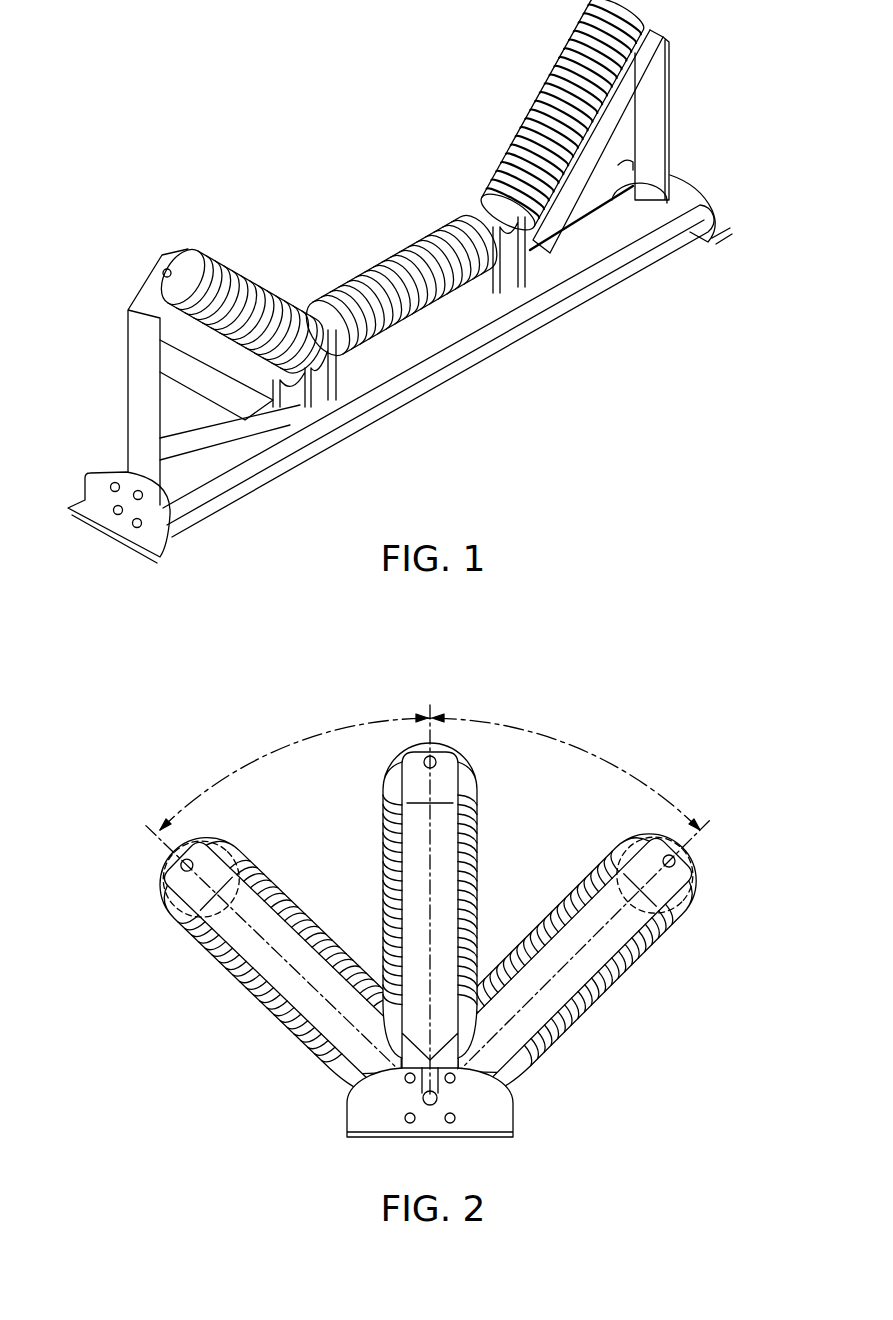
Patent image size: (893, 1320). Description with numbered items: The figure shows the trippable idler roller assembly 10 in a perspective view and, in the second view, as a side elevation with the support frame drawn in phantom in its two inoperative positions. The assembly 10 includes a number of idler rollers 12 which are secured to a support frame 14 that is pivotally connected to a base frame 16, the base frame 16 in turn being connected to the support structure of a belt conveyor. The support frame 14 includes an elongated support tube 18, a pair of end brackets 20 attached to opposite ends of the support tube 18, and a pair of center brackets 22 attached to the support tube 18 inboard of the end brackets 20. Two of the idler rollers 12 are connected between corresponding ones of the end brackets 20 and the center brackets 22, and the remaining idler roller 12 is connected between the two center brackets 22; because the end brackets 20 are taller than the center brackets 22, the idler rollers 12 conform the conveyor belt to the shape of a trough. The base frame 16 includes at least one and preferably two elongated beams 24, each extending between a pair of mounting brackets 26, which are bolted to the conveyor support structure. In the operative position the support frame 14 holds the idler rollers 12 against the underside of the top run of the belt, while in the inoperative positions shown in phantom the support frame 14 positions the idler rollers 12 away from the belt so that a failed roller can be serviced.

In FIG. 1, the trippable idler roller assembly 10 is at (421, 295).
In FIG. 2, the trippable idler roller assembly 10 is at (427, 900).
In FIG. 1, the idler roller 12 is at (247, 270).
In FIG. 2, the idler roller 12 is at (383, 852).
In FIG. 1, the support frame 14 is at (680, 148).
In FIG. 1, the base frame 16 is at (421, 310).
In FIG. 1, the support tube 18 is at (398, 357).
In FIG. 1, the end bracket 20 is at (137, 386).
In FIG. 2, the end bracket 20 is at (440, 868).
In FIG. 1, the center bracket 22 is at (300, 398).
In FIG. 1, the elongated beam 24 is at (598, 195).
In FIG. 1, the mounting bracket 26 is at (118, 547).
In FIG. 2, the mounting bracket 26 is at (516, 1117).